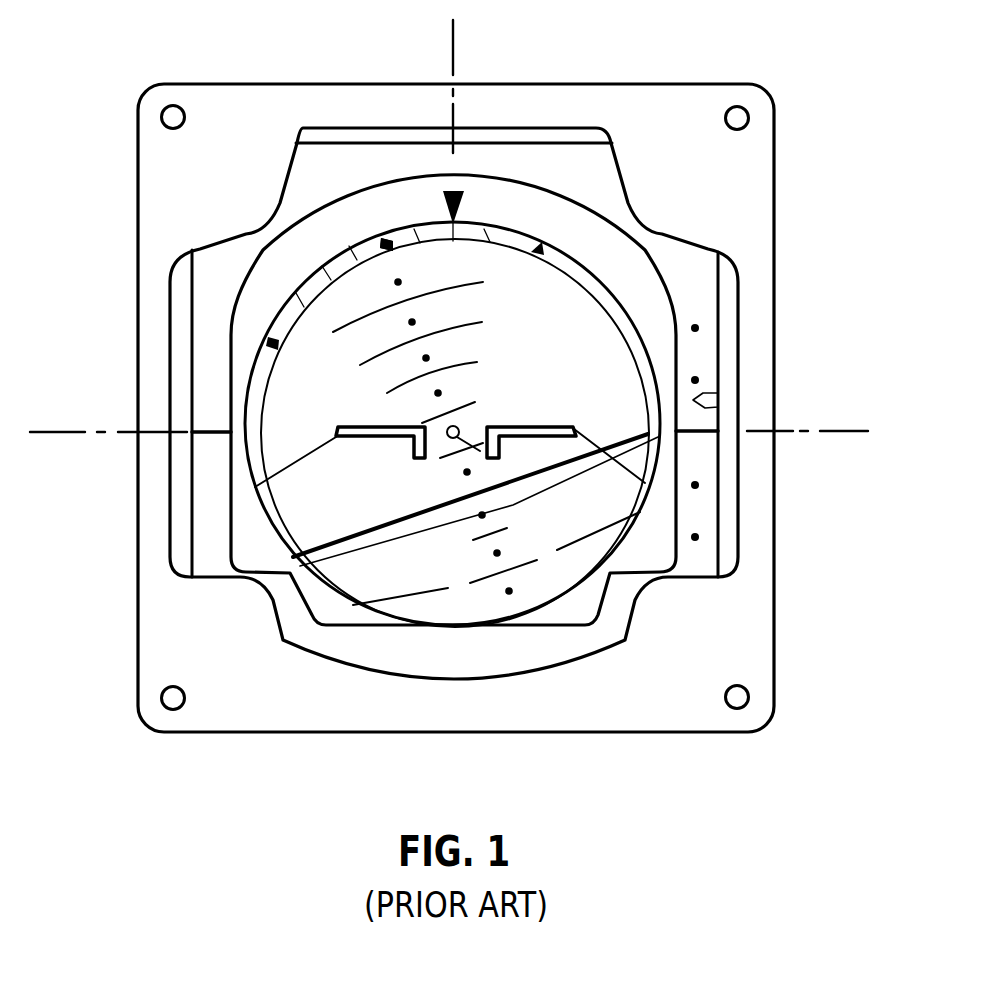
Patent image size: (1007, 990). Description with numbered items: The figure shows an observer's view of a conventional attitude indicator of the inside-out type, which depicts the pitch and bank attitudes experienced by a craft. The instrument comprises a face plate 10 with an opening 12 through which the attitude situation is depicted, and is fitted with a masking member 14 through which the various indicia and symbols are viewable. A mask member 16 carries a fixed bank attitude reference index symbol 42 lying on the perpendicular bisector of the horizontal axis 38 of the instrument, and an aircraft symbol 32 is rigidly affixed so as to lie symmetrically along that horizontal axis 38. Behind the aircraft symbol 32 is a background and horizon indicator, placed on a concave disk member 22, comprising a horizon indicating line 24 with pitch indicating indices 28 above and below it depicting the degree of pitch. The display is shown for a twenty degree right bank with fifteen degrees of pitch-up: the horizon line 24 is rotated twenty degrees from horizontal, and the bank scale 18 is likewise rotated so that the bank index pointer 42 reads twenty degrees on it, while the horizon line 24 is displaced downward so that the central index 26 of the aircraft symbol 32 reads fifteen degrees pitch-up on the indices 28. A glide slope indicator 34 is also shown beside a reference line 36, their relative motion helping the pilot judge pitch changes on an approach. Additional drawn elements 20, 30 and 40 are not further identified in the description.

The face plate 10 is at (660, 84).
The opening 12 is at (694, 247).
The masking member 14 is at (322, 163).
The mask member 16 is at (383, 193).
The bank scale 18 is at (347, 260).
The scale ring 20 is at (378, 240).
The concave disk member 22 is at (603, 389).
The horizon indicating line 24 is at (358, 531).
The central index 26 is at (459, 428).
The pitch indicating indices 28 is at (481, 336).
The lower pitch lines 30 is at (451, 554).
The aircraft symbol 32 is at (348, 423).
The glide slope indicator 34 is at (710, 398).
The reference line 36 is at (698, 436).
The horizontal axis 38 is at (843, 431).
The vertical centerline 40 is at (455, 45).
The bank attitude reference index symbol 42 is at (463, 201).